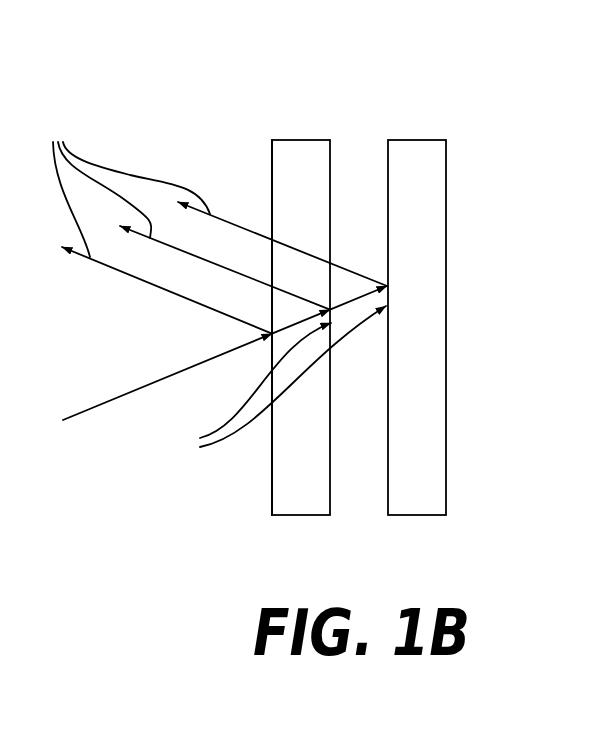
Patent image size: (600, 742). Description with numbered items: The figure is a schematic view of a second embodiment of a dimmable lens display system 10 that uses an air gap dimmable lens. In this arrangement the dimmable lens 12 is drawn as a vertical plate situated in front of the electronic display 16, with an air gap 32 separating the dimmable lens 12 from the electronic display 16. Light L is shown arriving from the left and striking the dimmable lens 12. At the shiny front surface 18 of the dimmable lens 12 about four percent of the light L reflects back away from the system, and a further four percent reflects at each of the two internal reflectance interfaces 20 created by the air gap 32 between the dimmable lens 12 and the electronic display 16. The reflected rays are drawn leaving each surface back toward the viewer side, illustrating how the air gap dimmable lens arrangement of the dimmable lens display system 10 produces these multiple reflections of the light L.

The dimmable lens display system 10 is at (440, 54).
The dimmable lens 12 is at (302, 139).
The electronic display 16 is at (418, 139).
The shiny front surface 18 is at (271, 475).
The internal reflectance interfaces 20 is at (281, 384).
The air gap 32 is at (352, 498).
The light L is at (131, 184).